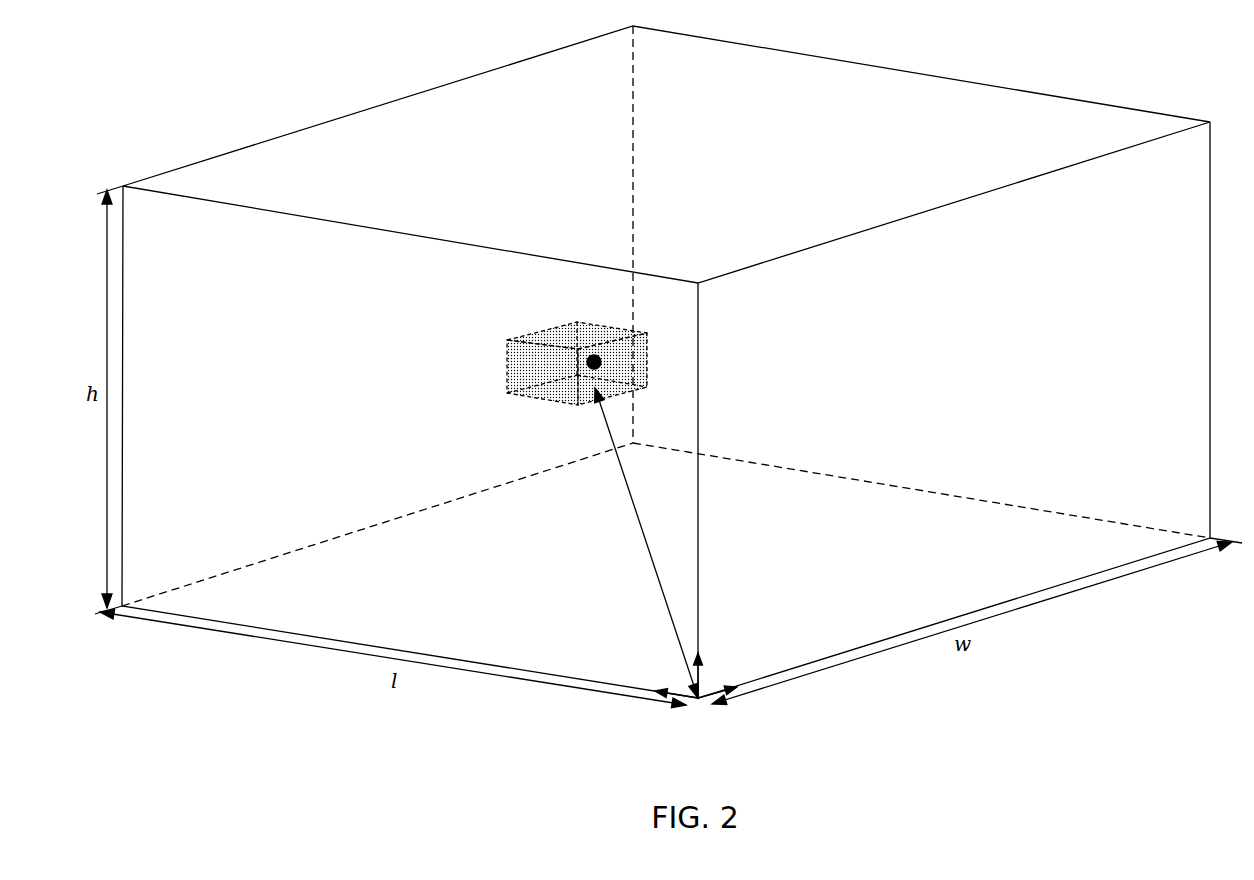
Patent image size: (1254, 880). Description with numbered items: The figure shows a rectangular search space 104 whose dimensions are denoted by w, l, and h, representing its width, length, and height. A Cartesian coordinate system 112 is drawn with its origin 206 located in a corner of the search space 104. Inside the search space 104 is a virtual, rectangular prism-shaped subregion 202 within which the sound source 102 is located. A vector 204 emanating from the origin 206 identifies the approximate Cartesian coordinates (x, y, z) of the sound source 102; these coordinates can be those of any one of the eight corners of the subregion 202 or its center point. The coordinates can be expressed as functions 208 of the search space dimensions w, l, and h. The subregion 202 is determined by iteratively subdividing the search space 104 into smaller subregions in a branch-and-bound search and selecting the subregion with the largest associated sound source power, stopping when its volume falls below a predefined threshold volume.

The search space 104 is at (666, 362).
The sound source 102 is at (613, 322).
The subregion 202 is at (505, 393).
The vector 204 is at (628, 543).
The Cartesian coordinate system 112 is at (671, 659).
The origin 206 is at (735, 681).
The functions 208 is at (325, 400).